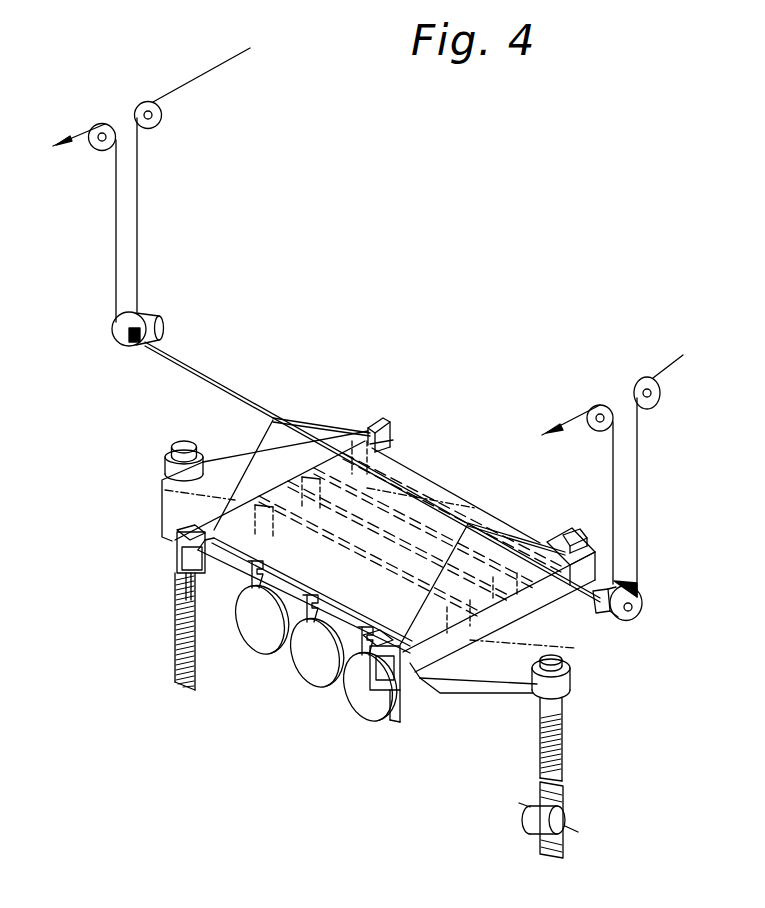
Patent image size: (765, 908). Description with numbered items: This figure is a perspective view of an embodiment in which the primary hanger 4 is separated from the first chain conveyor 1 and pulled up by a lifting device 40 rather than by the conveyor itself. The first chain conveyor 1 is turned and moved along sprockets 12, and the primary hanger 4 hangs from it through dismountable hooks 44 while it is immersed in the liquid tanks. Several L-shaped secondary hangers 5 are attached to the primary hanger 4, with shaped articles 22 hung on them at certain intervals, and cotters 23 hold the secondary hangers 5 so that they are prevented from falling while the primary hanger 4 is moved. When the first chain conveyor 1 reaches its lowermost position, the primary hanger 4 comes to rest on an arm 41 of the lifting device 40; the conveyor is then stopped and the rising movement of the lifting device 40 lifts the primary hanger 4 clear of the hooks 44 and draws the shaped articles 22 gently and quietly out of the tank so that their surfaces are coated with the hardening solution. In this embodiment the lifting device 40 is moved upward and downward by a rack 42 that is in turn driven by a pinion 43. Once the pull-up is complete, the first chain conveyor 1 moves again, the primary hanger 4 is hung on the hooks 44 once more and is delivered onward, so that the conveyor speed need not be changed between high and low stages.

The first chain conveyor 1 is at (663, 373).
The primary hanger 4 is at (410, 688).
The secondary hanger 5 is at (345, 436).
The sprocket 12 is at (133, 308).
The shaped article 22 is at (365, 712).
The cotter 23 is at (580, 530).
The lifting device 40 is at (590, 674).
The arm 41 is at (487, 683).
The rack 42 is at (558, 708).
The pinion 43 is at (568, 806).
The dismountable hook 44 is at (163, 327).